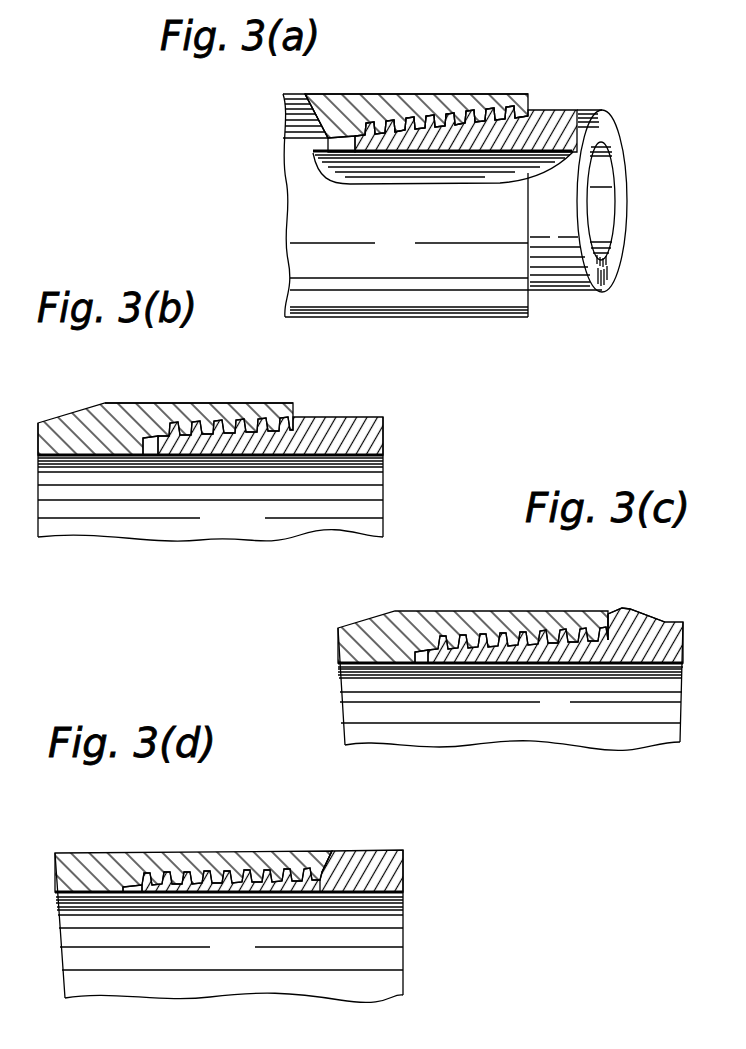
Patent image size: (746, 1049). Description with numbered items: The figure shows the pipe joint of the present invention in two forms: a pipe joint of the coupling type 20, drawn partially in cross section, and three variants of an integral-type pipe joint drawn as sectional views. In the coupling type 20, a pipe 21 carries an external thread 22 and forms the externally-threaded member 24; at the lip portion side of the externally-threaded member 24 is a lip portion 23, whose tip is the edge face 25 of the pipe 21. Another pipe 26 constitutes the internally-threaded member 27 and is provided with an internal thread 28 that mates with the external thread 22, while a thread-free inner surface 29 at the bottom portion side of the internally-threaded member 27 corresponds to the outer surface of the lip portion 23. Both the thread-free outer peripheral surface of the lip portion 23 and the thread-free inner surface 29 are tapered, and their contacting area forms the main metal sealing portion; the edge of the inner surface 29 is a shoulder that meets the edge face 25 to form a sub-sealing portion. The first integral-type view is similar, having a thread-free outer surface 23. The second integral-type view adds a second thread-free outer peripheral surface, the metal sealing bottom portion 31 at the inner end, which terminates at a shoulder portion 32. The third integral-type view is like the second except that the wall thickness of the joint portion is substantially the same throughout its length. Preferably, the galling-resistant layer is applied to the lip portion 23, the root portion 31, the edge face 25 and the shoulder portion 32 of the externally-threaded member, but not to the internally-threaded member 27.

In FIG. 3A, the pipe joint of the coupling type 20 is at (522, 75).
In FIG. 3A, the pipe 21 is at (607, 110).
In FIG. 3B, the pipe 21 is at (344, 417).
In FIG. 3C, the pipe 21 is at (680, 637).
In FIG. 3D, the pipe 21 is at (405, 858).
In FIG. 3A, the external thread 22 is at (400, 130).
In FIG. 3A, the lip portion 23 is at (333, 150).
In FIG. 3B, the lip portion 23 is at (158, 455).
In FIG. 3C, the lip portion 23 is at (428, 662).
In FIG. 3D, the lip portion 23 is at (137, 888).
In FIG. 3A, the externally-threaded member 24 is at (416, 157).
In FIG. 3B, the externally-threaded member 24 is at (226, 465).
In FIG. 3A, the edge face 25 is at (328, 139).
In FIG. 3C, the edge face 25 is at (408, 664).
In FIG. 3D, the edge face 25 is at (122, 893).
In FIG. 3A, the pipe 26 is at (296, 273).
In FIG. 3B, the pipe 26 is at (93, 421).
In FIG. 3C, the pipe 26 is at (394, 633).
In FIG. 3D, the pipe 26 is at (120, 860).
In FIG. 3A, the internally-threaded member 27 is at (404, 95).
In FIG. 3B, the internally-threaded member 27 is at (204, 402).
In FIG. 3A, the internal thread 28 is at (438, 93).
In FIG. 3A, the thread-free inner surface 29 is at (320, 95).
In FIG. 3C, the metal sealing bottom portion 31 is at (607, 640).
In FIG. 3D, the metal sealing bottom portion 31 is at (318, 885).
In FIG. 3C, the shoulder portion 32 is at (620, 613).
In FIG. 3D, the shoulder portion 32 is at (340, 860).